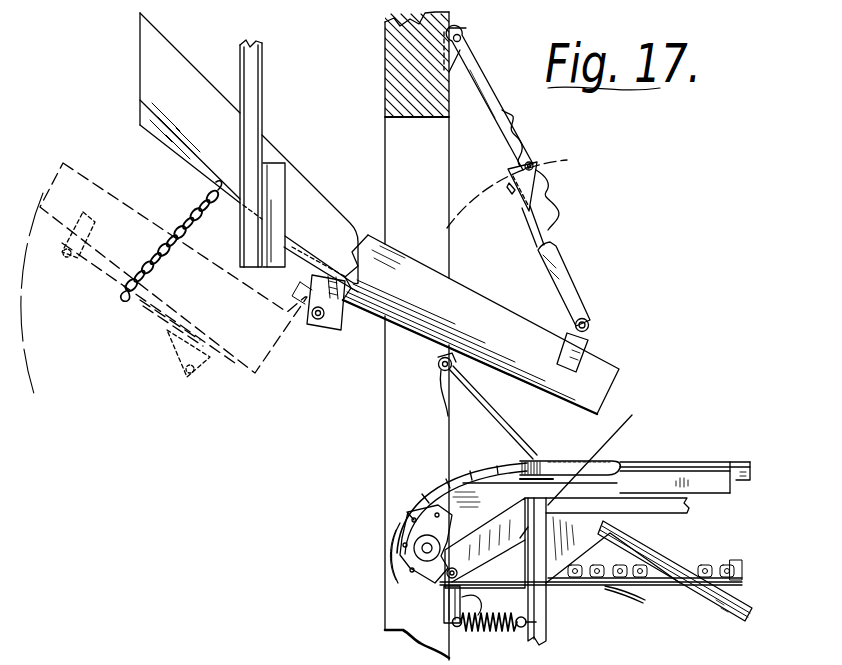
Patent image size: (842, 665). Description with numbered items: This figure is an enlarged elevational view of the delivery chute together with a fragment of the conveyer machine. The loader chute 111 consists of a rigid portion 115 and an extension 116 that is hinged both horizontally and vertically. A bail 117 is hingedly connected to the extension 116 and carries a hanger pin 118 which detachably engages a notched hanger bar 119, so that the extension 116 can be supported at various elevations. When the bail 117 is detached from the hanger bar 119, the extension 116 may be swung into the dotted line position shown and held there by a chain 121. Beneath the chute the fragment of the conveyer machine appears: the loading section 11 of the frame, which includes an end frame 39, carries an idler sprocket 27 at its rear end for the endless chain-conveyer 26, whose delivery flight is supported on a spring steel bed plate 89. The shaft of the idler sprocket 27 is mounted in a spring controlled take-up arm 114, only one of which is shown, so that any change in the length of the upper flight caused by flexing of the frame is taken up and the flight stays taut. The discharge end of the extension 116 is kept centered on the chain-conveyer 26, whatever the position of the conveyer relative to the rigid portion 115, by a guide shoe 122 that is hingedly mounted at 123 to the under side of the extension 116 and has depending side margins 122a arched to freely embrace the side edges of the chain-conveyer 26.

The loading section 11 is at (672, 596).
The chain-conveyer 26 is at (392, 557).
The idler sprocket 27 is at (413, 507).
The end frame 39 is at (556, 630).
The bed plate 89 is at (697, 477).
The loader chute 111 is at (353, 212).
The take-up arm 114 is at (472, 635).
The rigid portion 115 is at (162, 52).
The extension 116 is at (502, 273).
The bail 117 is at (568, 283).
The hanger pin 118 is at (540, 160).
The notched hanger bar 119 is at (477, 63).
The chain 121 is at (186, 220).
The guide shoe 122 is at (560, 437).
The depending side margins 122a is at (613, 458).
The hinge mounting 123 is at (448, 415).